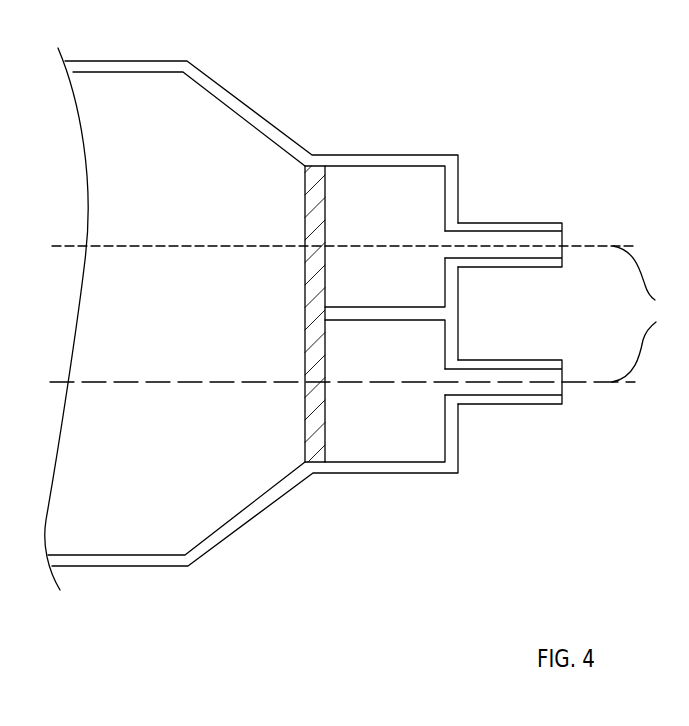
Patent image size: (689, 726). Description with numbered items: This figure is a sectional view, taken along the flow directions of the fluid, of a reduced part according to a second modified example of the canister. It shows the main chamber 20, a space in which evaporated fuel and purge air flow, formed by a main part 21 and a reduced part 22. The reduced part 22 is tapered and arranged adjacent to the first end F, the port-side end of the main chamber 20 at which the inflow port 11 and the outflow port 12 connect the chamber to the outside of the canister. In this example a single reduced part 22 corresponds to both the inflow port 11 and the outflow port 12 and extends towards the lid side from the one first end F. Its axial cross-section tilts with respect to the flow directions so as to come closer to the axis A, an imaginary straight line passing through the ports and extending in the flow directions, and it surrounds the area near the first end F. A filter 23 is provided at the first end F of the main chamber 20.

The main chamber 20 is at (158, 324).
The main part 21 is at (113, 564).
The reduced part 22 is at (252, 110).
The filter 23 is at (316, 410).
The first end F is at (305, 217).
The inflow port 11 is at (515, 224).
The outflow port 12 is at (508, 403).
The axis A is at (642, 314).